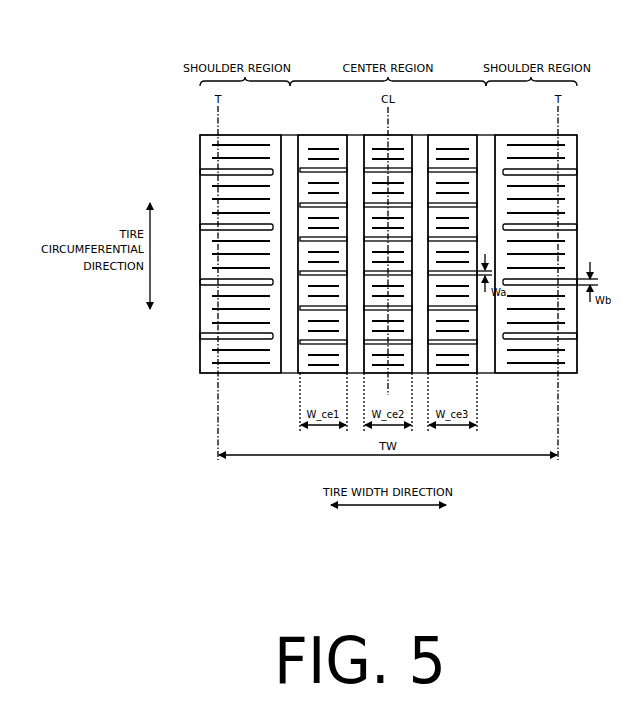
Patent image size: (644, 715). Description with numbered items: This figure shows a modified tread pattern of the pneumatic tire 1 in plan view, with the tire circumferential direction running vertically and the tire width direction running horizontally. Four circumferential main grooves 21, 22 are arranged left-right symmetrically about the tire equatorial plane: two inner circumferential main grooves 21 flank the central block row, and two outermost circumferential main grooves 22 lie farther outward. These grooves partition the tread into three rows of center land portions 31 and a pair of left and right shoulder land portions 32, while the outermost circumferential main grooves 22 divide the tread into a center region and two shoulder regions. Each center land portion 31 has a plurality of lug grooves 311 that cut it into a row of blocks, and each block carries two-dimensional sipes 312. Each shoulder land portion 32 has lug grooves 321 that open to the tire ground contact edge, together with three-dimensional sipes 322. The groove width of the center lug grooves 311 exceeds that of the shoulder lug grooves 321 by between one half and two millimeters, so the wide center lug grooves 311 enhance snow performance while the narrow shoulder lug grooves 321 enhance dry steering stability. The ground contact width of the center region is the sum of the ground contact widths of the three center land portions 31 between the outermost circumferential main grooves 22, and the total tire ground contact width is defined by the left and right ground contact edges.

The pneumatic tire 1 is at (571, 42).
The circumferential main groove 21 is at (356, 141).
The outermost circumferential main groove 22 is at (289, 141).
The center land portion 31 is at (326, 132).
The shoulder land portion 32 is at (248, 132).
The lug groove 311 is at (407, 162).
The sipe 312 is at (398, 185).
The lug groove 321 is at (200, 172).
The sipe 322 is at (212, 186).